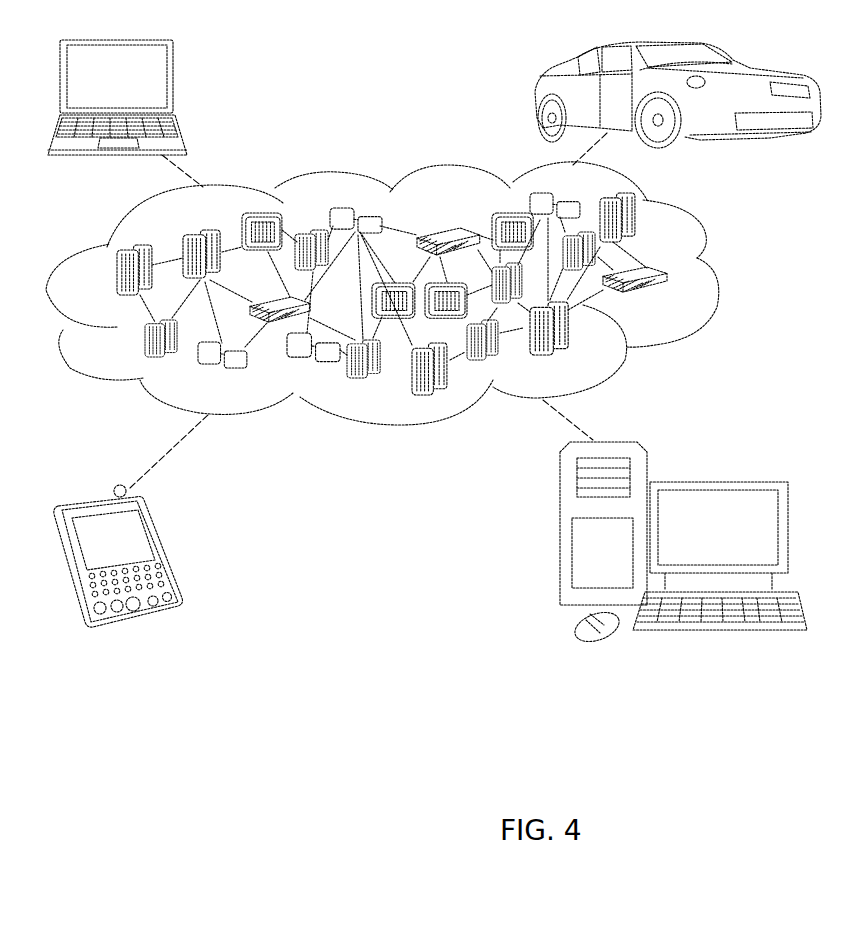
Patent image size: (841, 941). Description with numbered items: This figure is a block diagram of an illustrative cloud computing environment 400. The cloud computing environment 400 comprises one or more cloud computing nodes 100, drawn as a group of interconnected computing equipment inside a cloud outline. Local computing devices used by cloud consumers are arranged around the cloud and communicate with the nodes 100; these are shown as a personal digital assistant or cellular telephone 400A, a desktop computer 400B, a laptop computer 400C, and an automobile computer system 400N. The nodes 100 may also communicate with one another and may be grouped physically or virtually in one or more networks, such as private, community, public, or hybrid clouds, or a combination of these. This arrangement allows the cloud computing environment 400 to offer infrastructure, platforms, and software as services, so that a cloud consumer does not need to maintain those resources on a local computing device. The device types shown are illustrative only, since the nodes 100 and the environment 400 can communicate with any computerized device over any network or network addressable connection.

The cloud computing environment 400 is at (720, 271).
The cloud computing nodes 100 is at (666, 297).
The personal digital assistant or cellular telephone 400A is at (160, 550).
The desktop computer 400B is at (717, 480).
The laptop computer 400C is at (176, 82).
The automobile computer system 400N is at (536, 93).